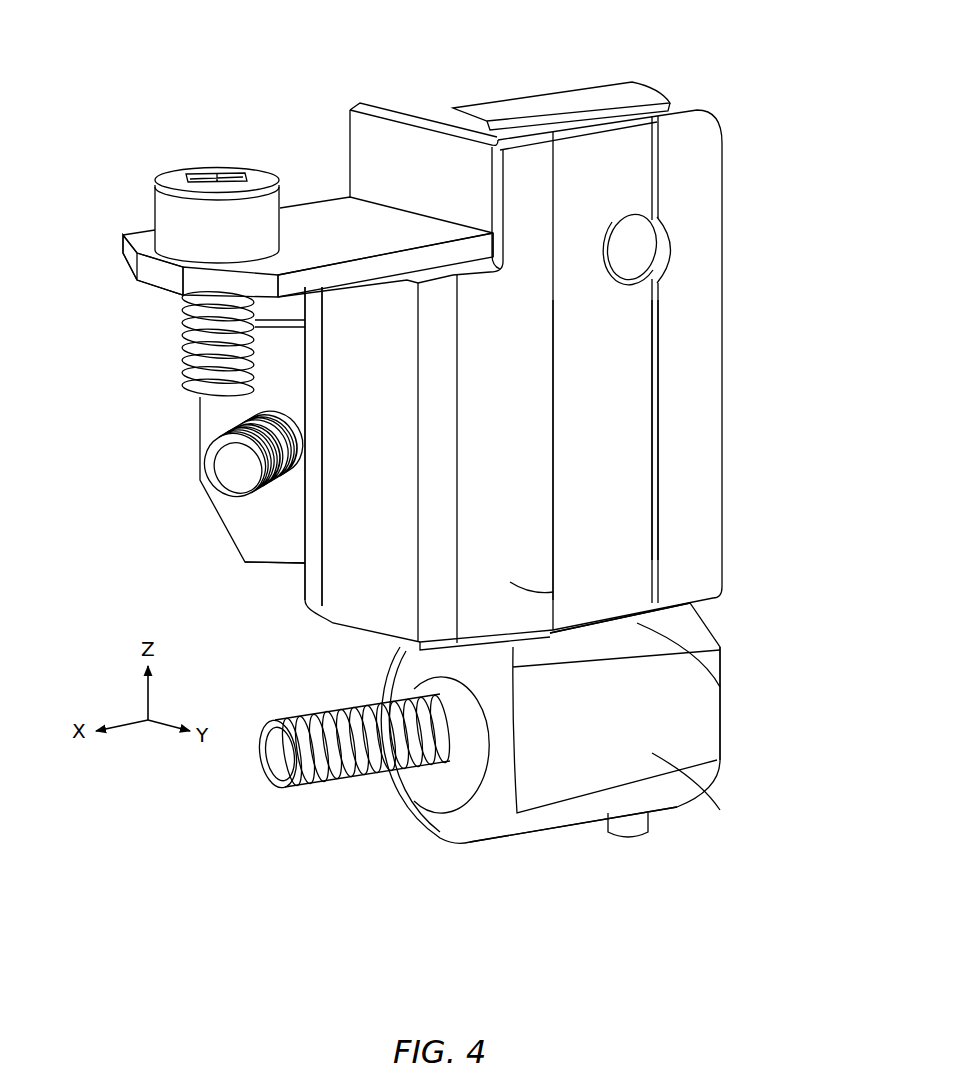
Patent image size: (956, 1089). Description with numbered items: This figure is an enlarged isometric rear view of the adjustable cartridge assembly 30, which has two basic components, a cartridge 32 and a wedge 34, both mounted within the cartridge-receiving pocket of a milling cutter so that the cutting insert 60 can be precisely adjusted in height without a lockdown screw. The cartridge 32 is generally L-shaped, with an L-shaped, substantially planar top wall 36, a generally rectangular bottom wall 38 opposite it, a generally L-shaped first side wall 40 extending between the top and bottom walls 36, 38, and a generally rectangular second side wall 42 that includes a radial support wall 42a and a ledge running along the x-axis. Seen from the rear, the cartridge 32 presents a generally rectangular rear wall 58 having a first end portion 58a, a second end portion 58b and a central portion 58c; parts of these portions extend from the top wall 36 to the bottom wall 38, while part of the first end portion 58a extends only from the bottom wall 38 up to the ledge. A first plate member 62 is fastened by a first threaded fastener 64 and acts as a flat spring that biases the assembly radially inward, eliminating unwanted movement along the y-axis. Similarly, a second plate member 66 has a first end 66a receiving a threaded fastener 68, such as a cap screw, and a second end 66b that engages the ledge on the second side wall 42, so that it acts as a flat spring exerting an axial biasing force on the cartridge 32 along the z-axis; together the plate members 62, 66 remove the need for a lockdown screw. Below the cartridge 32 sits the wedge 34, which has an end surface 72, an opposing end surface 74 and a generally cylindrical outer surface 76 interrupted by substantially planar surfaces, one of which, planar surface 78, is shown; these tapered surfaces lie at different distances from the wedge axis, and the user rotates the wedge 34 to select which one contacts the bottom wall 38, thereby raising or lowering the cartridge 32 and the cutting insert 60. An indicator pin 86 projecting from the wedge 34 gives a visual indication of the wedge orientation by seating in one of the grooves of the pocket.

The adjustable cartridge assembly 30 is at (221, 92).
The cartridge 32 is at (729, 228).
The wedge 34 is at (738, 715).
The top wall 36 is at (398, 98).
The bottom wall 38 is at (640, 626).
The first side wall 40 is at (731, 326).
The second side wall 42 is at (343, 592).
The radial support wall 42a is at (310, 566).
The rear wall 58 is at (618, 438).
The first end portion 58a is at (510, 582).
The second end portion 58b is at (698, 513).
The central portion 58c is at (620, 480).
The cutting insert 60 is at (577, 80).
The first plate member 62 is at (256, 538).
The first threaded fastener 64 is at (218, 468).
The second plate member 66 is at (310, 214).
The first end 66a is at (143, 238).
The second end 66b is at (337, 220).
The threaded fastener 68 is at (176, 164).
The end surface 72 is at (726, 743).
The opposing end surface 74 is at (430, 792).
The cylindrical outer surface 76 is at (686, 630).
The planar surface 78 is at (720, 810).
The indicator pin 86 is at (632, 842).